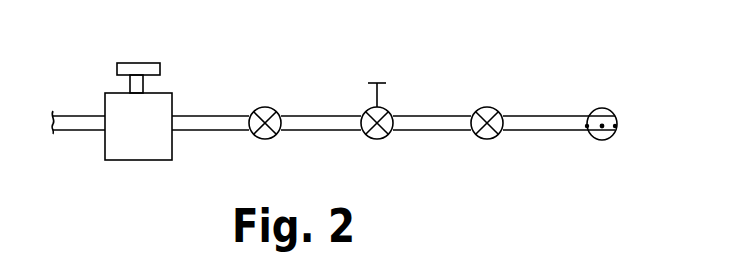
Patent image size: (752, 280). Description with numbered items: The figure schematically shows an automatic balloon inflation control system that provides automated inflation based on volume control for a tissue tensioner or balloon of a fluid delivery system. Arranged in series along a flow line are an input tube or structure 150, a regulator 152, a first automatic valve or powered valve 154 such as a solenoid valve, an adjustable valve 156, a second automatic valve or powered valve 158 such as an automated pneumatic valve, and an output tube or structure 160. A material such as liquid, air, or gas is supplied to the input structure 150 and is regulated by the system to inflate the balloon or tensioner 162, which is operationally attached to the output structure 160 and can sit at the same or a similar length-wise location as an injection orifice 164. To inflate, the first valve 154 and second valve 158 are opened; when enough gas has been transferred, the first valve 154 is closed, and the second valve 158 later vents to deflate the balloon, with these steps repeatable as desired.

The input tube or structure 150 is at (67, 117).
The regulator 152 is at (165, 100).
The first automatic valve or powered valve 154 is at (262, 107).
The adjustable valve 156 is at (382, 108).
The second automatic valve or powered valve 158 is at (487, 108).
The output tube or structure 160 is at (537, 117).
The balloon or tensioner 162 is at (600, 141).
The injection orifice 164 is at (603, 124).